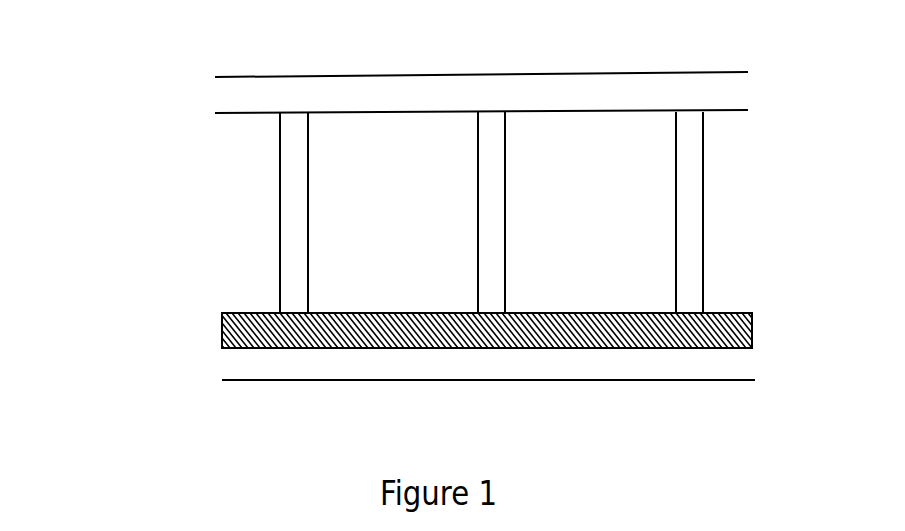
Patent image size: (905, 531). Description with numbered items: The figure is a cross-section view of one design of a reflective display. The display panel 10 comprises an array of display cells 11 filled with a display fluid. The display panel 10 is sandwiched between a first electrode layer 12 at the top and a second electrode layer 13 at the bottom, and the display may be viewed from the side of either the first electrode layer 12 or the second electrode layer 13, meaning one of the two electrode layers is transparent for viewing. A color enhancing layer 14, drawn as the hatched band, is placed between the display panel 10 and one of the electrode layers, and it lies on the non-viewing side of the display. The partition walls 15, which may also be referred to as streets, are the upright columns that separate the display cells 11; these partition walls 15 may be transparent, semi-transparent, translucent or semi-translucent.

The display panel 10 is at (180, 220).
The display cells 11 is at (340, 255).
The first electrode layer 12 is at (712, 98).
The second electrode layer 13 is at (565, 360).
The color enhancing layer 14 is at (760, 330).
The partition walls 15 is at (298, 165).